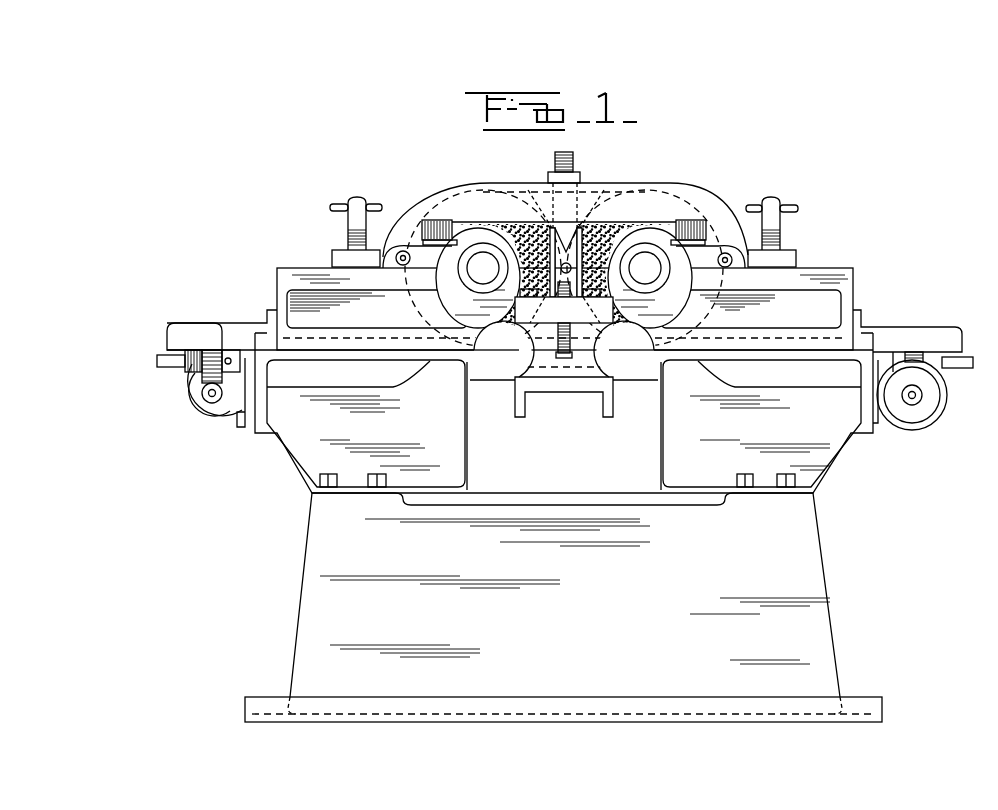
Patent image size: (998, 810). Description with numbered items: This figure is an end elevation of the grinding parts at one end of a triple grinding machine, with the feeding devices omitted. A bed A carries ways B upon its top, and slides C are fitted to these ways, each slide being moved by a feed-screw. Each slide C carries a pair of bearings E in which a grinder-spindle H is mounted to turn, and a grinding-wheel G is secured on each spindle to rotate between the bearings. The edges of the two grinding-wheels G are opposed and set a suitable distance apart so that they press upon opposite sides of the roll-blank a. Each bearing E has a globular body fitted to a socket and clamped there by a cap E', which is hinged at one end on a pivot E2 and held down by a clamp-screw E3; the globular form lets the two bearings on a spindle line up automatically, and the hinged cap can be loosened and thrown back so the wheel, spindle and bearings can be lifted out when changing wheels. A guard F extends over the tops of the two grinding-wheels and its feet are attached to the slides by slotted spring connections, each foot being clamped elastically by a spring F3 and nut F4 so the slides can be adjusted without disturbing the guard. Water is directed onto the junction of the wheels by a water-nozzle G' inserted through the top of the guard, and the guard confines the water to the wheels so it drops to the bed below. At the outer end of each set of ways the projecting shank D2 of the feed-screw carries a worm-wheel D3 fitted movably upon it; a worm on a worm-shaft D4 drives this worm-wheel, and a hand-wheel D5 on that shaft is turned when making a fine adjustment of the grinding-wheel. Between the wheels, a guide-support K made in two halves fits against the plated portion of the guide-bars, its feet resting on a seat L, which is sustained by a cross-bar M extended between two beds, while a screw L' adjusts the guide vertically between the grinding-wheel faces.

The bed A is at (576, 458).
The ways B is at (263, 337).
The slide C is at (291, 278).
The shank D2 is at (157, 358).
The worm-wheel D3 is at (214, 327).
The worm-shaft D4 is at (211, 398).
The hand-wheel D5 is at (178, 400).
The bearing E is at (564, 268).
The cap E' is at (686, 197).
The pivot E2 is at (745, 240).
The clamp-screw E3 is at (438, 218).
The guard F is at (497, 182).
The spring F3 is at (347, 242).
The nut F4 is at (343, 213).
The grinding-wheel G is at (564, 349).
The water-nozzle G' is at (589, 221).
The grinder-spindle H is at (564, 268).
The guide-support K is at (501, 284).
The roll-blank a is at (626, 284).
The seat L is at (564, 291).
The screw L' is at (572, 345).
The cross-bar M is at (563, 410).